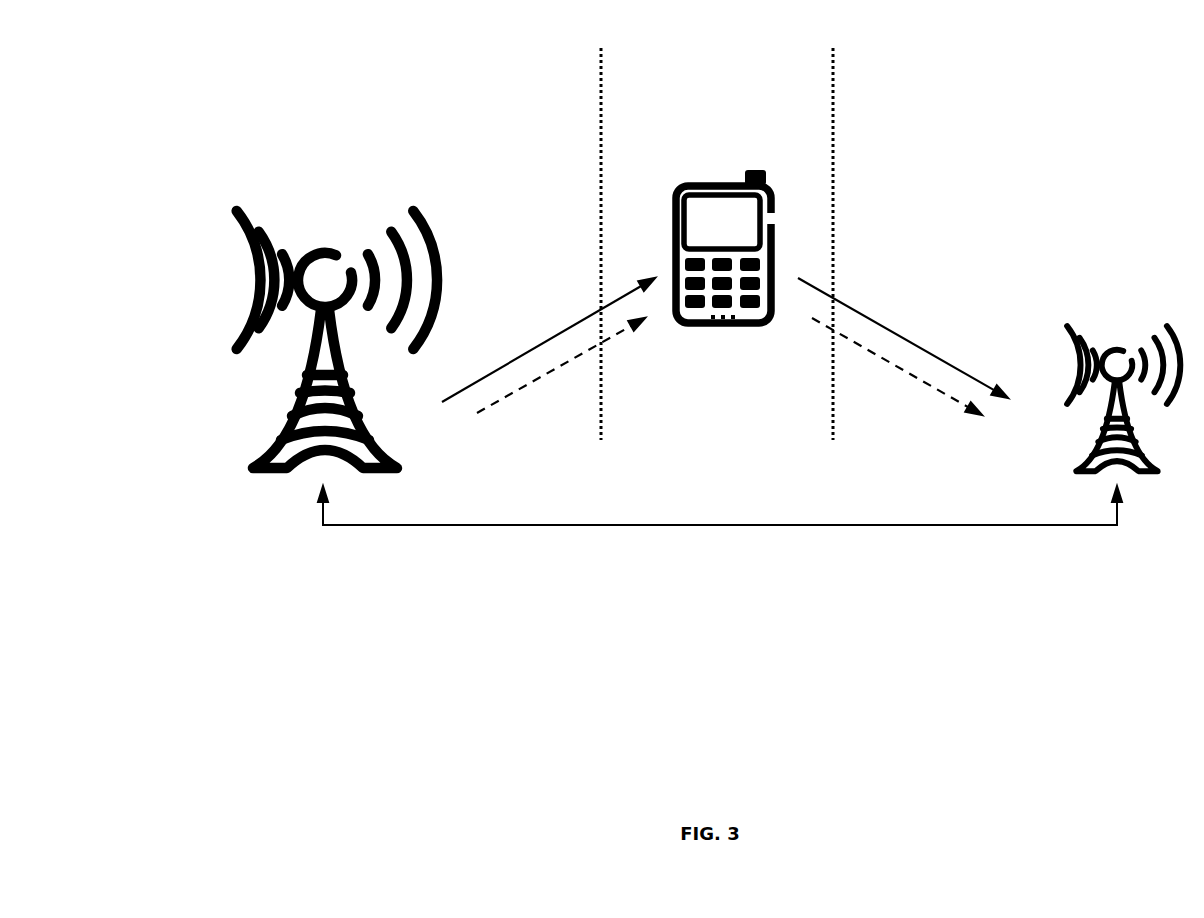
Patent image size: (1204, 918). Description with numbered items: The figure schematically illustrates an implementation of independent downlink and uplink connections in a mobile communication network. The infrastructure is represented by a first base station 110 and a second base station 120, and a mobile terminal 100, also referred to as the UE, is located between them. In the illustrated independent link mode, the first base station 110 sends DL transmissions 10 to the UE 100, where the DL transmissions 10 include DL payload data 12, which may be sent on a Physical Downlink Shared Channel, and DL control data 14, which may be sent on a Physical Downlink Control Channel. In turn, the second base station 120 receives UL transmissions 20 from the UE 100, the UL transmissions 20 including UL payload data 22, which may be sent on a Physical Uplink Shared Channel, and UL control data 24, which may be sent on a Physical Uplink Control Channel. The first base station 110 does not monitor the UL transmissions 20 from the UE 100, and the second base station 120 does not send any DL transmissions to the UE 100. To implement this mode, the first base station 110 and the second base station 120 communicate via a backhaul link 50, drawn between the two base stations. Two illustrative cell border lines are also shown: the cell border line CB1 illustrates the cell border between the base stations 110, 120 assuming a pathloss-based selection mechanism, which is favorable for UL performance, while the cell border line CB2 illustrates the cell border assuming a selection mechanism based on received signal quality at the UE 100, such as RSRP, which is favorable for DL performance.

The DL transmissions 10 is at (548, 359).
The DL payload data 12 is at (578, 320).
The DL control data 14 is at (510, 394).
The UL transmissions 20 is at (903, 350).
The UL payload data 22 is at (875, 322).
The UL control data 24 is at (905, 371).
The backhaul link 50 is at (730, 527).
The mobile terminal 100 is at (703, 182).
The first base station 110 is at (265, 480).
The second base station 120 is at (1150, 480).
The cell border line CB1 is at (600, 82).
The cell border line CB2 is at (832, 82).